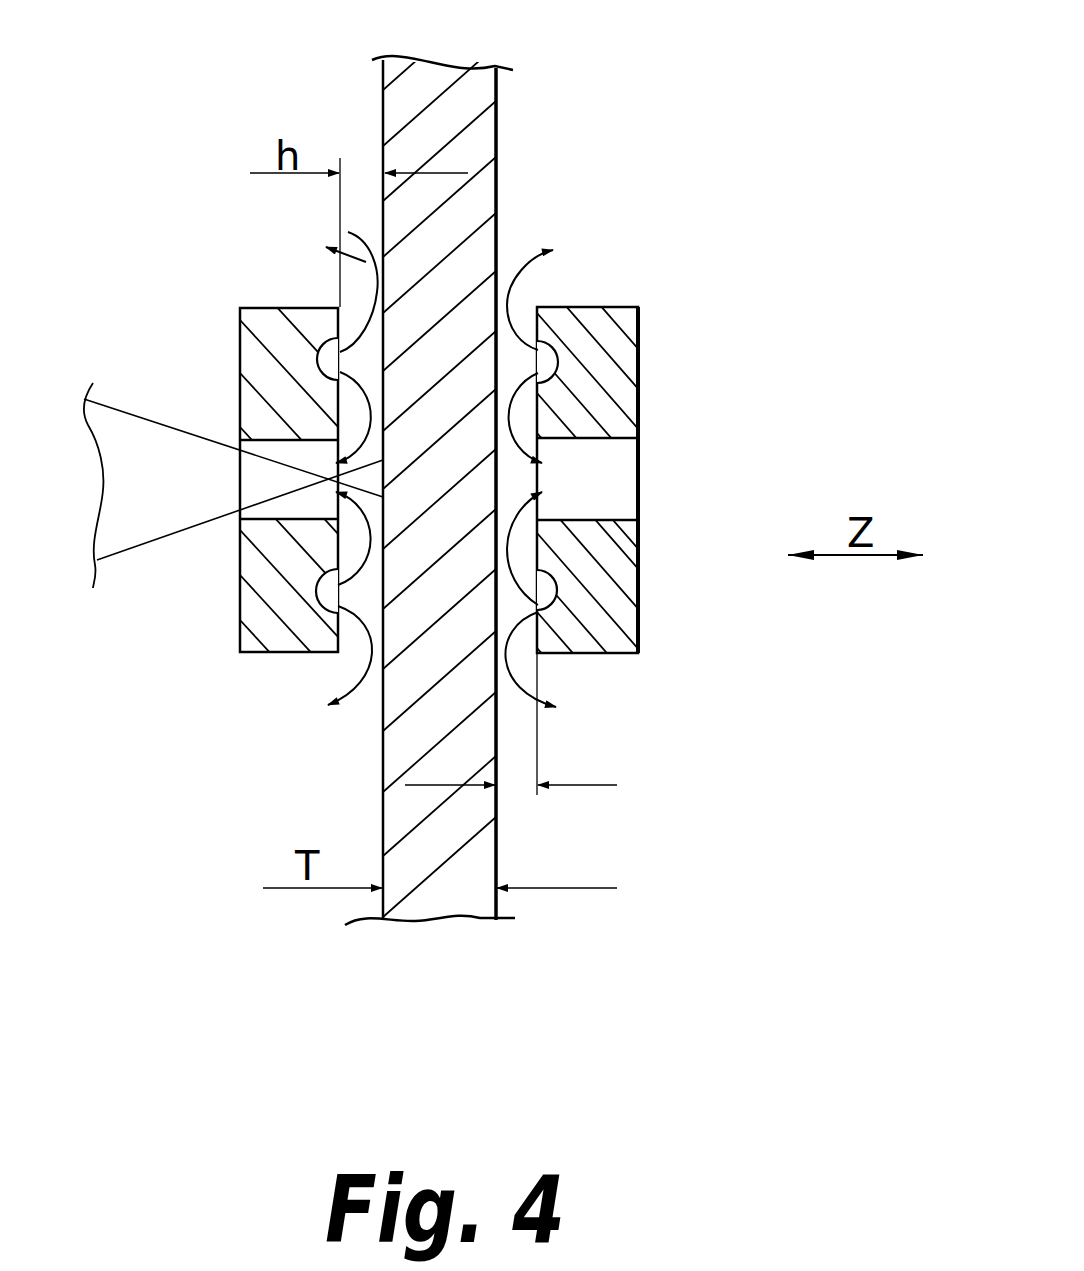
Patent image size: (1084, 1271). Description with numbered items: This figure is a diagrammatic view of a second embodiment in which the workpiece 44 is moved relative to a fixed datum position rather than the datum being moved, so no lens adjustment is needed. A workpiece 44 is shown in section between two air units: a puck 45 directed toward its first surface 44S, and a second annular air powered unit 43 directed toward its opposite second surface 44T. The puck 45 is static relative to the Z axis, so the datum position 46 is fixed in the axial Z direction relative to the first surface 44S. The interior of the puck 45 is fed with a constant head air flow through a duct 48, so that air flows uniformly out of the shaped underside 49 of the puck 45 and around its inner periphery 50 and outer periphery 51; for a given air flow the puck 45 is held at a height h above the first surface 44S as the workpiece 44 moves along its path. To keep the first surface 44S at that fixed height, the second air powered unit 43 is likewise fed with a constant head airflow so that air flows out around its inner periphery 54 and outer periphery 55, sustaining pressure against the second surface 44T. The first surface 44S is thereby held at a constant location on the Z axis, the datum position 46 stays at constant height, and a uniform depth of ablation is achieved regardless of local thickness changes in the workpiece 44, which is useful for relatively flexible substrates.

The second annular air powered unit 43 is at (620, 340).
The workpiece 44 is at (445, 230).
The first surface 44S is at (385, 120).
The second surface 44T is at (498, 125).
The puck 45 is at (265, 328).
The datum position 46 is at (327, 478).
The duct 48 is at (322, 352).
The shaped underside 49 is at (333, 630).
The inner periphery 50 is at (378, 407).
The outer periphery 51 is at (348, 232).
The inner periphery 54 is at (495, 432).
The outer periphery 55 is at (503, 302).